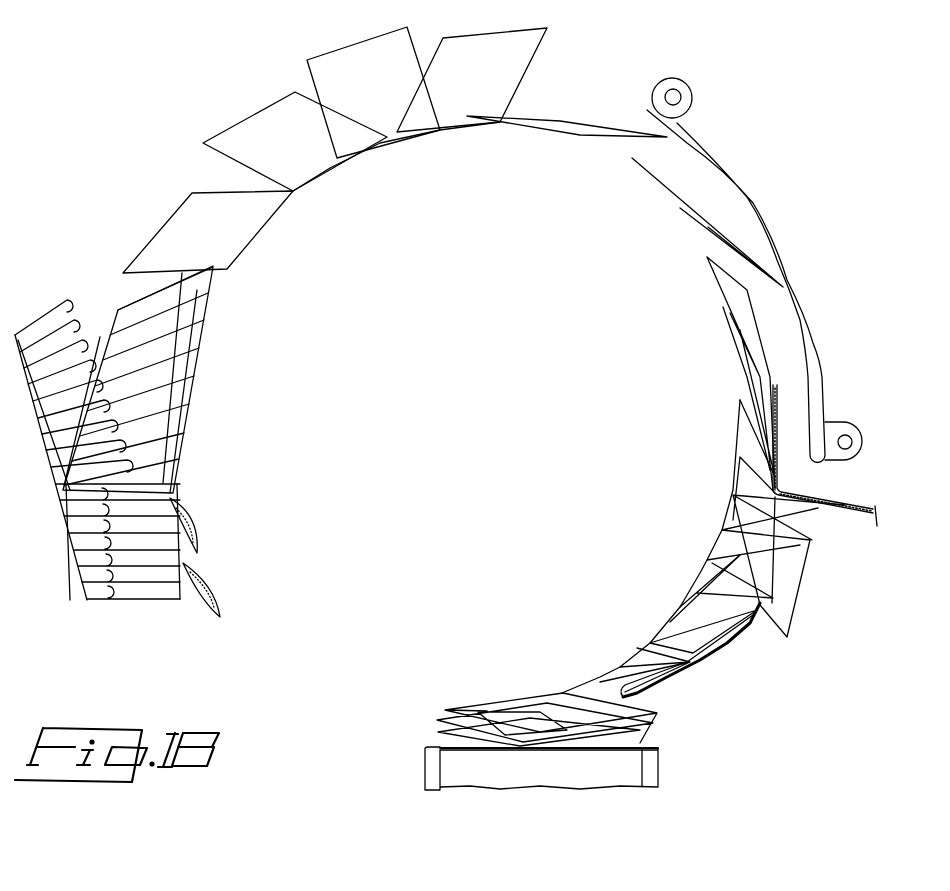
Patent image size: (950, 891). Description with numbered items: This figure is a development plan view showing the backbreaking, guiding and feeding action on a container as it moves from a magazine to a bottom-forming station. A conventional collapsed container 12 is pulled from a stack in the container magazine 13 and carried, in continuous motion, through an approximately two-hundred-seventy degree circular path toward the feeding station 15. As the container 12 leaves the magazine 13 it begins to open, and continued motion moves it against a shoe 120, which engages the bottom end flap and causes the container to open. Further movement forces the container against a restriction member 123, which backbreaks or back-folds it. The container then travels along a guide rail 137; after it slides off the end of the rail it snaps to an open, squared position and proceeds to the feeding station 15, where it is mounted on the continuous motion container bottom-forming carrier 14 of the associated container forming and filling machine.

The collapsed container 12 is at (443, 748).
The container magazine 13 is at (422, 768).
The continuous motion container bottom-forming carrier 14 is at (33, 323).
The feeding station 15 is at (173, 443).
The shoe 120 is at (720, 640).
The restriction member 123 is at (822, 507).
The guide rail 137 is at (752, 200).